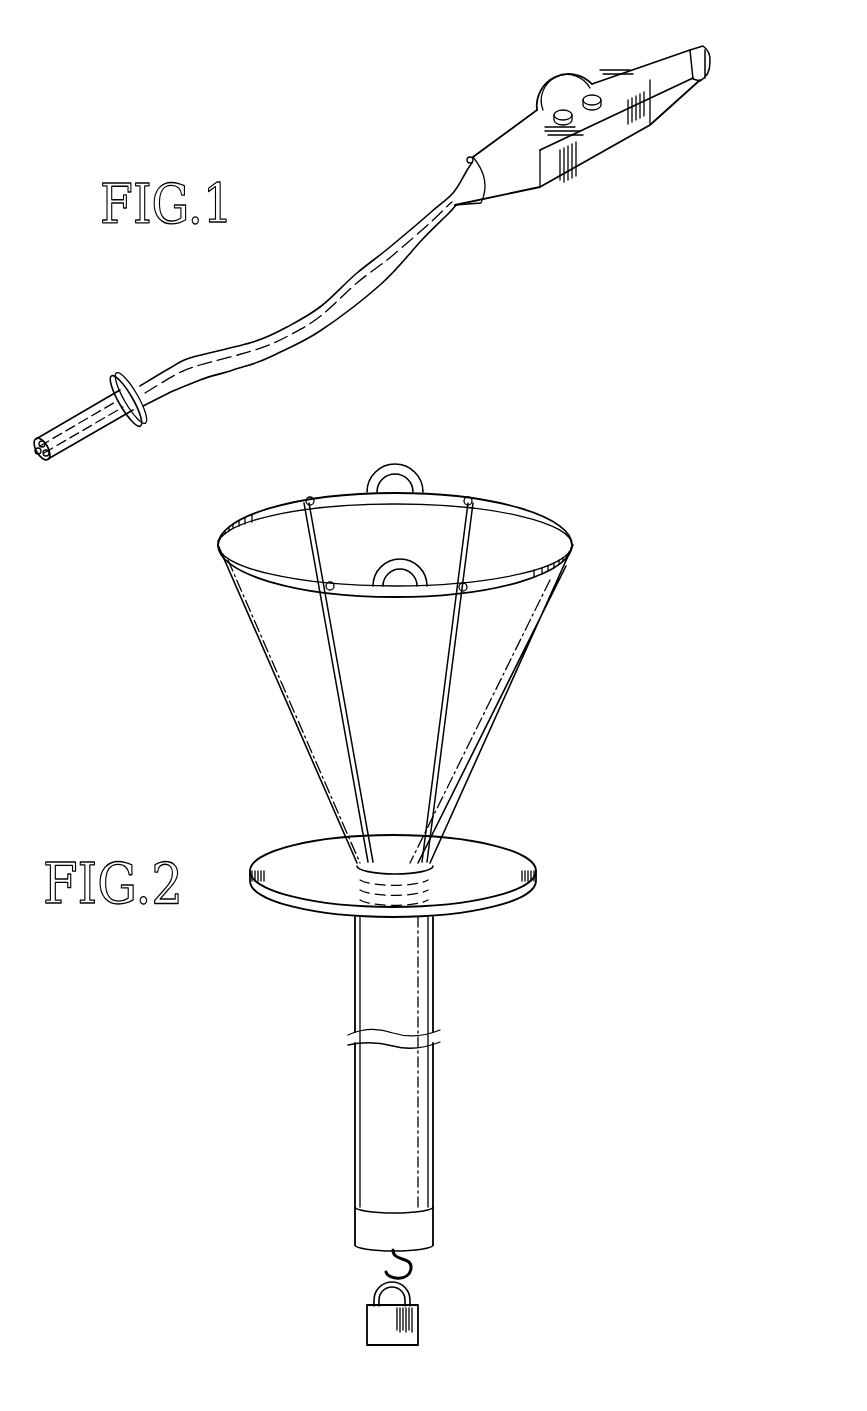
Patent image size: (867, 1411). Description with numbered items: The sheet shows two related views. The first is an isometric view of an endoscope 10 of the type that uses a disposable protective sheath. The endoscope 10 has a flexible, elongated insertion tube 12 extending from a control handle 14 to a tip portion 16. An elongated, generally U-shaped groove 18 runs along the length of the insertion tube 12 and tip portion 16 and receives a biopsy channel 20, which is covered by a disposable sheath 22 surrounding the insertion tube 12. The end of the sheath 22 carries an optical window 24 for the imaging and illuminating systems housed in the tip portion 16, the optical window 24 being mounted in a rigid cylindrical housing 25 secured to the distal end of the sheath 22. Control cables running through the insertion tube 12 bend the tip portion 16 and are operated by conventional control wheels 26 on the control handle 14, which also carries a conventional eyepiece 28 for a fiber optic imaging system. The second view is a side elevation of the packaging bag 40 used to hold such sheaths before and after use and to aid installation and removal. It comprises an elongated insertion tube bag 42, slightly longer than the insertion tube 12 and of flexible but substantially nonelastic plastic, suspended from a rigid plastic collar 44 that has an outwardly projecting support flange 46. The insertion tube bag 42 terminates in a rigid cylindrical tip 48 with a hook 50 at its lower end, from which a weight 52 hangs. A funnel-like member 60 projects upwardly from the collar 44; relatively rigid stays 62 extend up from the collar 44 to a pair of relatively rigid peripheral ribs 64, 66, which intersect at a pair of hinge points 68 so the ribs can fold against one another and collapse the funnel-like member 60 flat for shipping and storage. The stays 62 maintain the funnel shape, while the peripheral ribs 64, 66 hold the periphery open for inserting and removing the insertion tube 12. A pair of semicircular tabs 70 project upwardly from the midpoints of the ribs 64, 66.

In FIG. 1, the endoscope 10 is at (527, 112).
In FIG. 1, the insertion tube 12 is at (213, 375).
In FIG. 1, the control handle 14 is at (607, 120).
In FIG. 1, the tip portion 16 is at (51, 428).
In FIG. 1, the groove 18 is at (295, 325).
In FIG. 1, the biopsy channel 20 is at (354, 281).
In FIG. 1, the disposable sheath 22 is at (142, 422).
In FIG. 1, the optical window 24 is at (40, 462).
In FIG. 1, the rigid cylindrical housing 25 is at (57, 462).
In FIG. 1, the control wheels 26 is at (562, 78).
In FIG. 1, the eyepiece 28 is at (712, 55).
In FIG. 2, the packaging bag 40 is at (490, 462).
In FIG. 2, the insertion tube bag 42 is at (436, 1005).
In FIG. 2, the collar 44 is at (410, 878).
In FIG. 2, the support flange 46 is at (540, 880).
In FIG. 2, the tip 48 is at (432, 1227).
In FIG. 2, the hook 50 is at (414, 1268).
In FIG. 2, the weight 52 is at (419, 1325).
In FIG. 2, the funnel-like member 60 is at (522, 668).
In FIG. 2, the stays 62 is at (432, 782).
In FIG. 2, the peripheral rib 64 is at (289, 498).
In FIG. 2, the peripheral rib 66 is at (272, 585).
In FIG. 2, the hinge points 68 is at (217, 546).
In FIG. 2, the semicircular tabs 70 is at (411, 463).